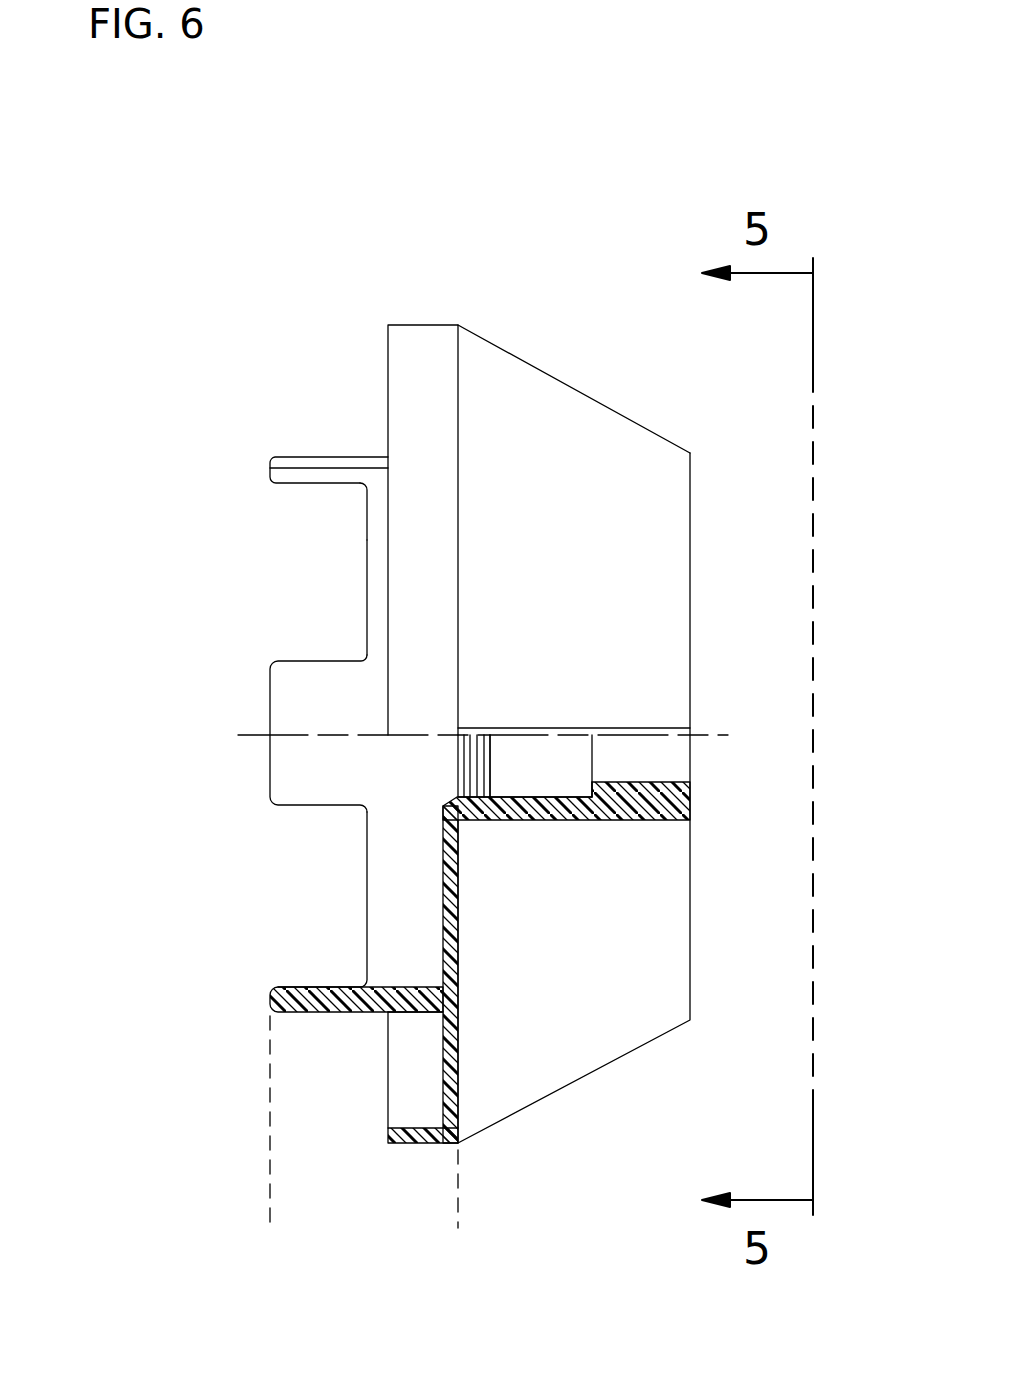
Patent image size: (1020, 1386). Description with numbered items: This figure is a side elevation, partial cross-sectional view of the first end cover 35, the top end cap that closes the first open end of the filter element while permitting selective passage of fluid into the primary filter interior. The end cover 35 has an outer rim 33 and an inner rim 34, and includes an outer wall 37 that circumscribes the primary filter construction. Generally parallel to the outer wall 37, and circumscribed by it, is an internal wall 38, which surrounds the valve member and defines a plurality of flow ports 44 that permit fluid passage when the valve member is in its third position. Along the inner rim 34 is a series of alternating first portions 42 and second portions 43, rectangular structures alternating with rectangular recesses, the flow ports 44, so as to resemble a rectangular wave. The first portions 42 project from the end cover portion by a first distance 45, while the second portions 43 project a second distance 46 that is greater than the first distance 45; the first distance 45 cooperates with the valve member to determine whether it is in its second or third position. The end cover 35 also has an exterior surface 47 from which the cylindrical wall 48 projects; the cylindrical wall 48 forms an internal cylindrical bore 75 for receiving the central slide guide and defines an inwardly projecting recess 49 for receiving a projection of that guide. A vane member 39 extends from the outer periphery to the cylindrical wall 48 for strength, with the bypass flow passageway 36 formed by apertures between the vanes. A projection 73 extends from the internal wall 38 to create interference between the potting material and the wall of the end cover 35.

The first end cover 35 is at (255, 236).
The exterior surface 47 is at (458, 372).
The vane member 39 is at (612, 420).
The internal wall 38 is at (320, 457).
The second portions 43 is at (270, 466).
The flow ports 44 is at (295, 484).
The first portions 42 is at (367, 541).
The inwardly projecting recess 49 is at (482, 795).
The internal cylindrical bore 75 is at (556, 795).
The first distance 45 is at (367, 862).
The bypass flow passageway 36 is at (455, 940).
The cylindrical wall 48 is at (665, 812).
The inner rim 34 is at (270, 1012).
The projection 73 is at (420, 1014).
The outer rim 33 is at (388, 1132).
The outer wall 37 is at (415, 1137).
The second distance 46 is at (270, 1228).